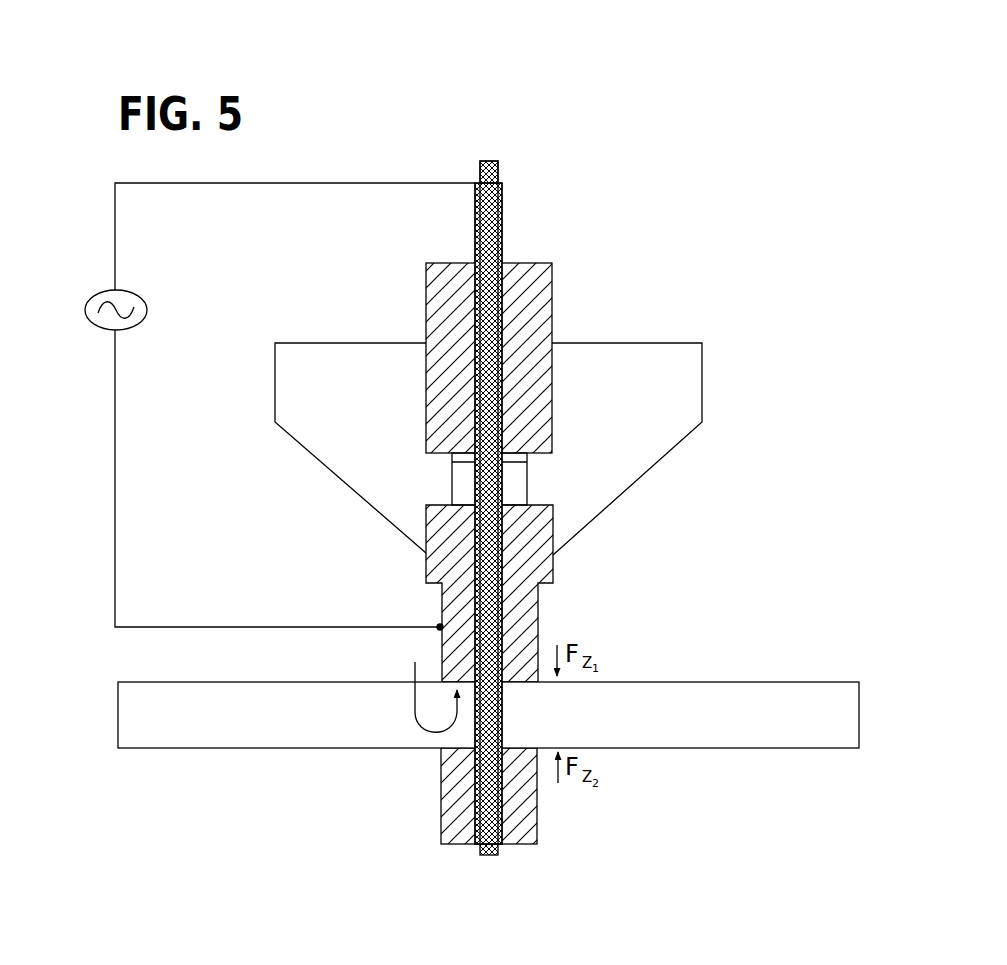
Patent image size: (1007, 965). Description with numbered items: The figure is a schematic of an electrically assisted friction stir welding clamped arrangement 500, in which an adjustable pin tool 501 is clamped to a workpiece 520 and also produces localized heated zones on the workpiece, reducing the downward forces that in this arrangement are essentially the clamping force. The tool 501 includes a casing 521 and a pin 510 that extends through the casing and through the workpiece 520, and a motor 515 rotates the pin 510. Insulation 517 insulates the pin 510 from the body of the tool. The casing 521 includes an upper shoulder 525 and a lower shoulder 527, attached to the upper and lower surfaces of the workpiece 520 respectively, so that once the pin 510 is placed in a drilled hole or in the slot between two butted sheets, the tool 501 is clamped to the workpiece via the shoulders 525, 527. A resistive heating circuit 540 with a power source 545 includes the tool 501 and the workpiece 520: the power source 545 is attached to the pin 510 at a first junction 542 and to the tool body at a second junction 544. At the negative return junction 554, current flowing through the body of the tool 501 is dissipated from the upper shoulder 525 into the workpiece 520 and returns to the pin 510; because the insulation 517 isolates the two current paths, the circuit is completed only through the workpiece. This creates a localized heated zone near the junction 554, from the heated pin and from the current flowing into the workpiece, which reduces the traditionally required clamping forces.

The electrically assisted friction stir welding clamped arrangement 500 is at (267, 266).
The adjustable pin tool 501 is at (560, 300).
The pin 510 is at (503, 727).
The motor 515 is at (527, 485).
The insulation 517 is at (503, 622).
The workpiece 520 is at (802, 740).
The casing 521 is at (375, 444).
The upper shoulder 525 is at (538, 632).
The lower shoulder 527 is at (441, 792).
The resistive heating circuit 540 is at (111, 237).
The first junction 542 is at (477, 182).
The second junction 544 is at (440, 626).
The power source 545 is at (147, 310).
The negative return junction 554 is at (427, 681).